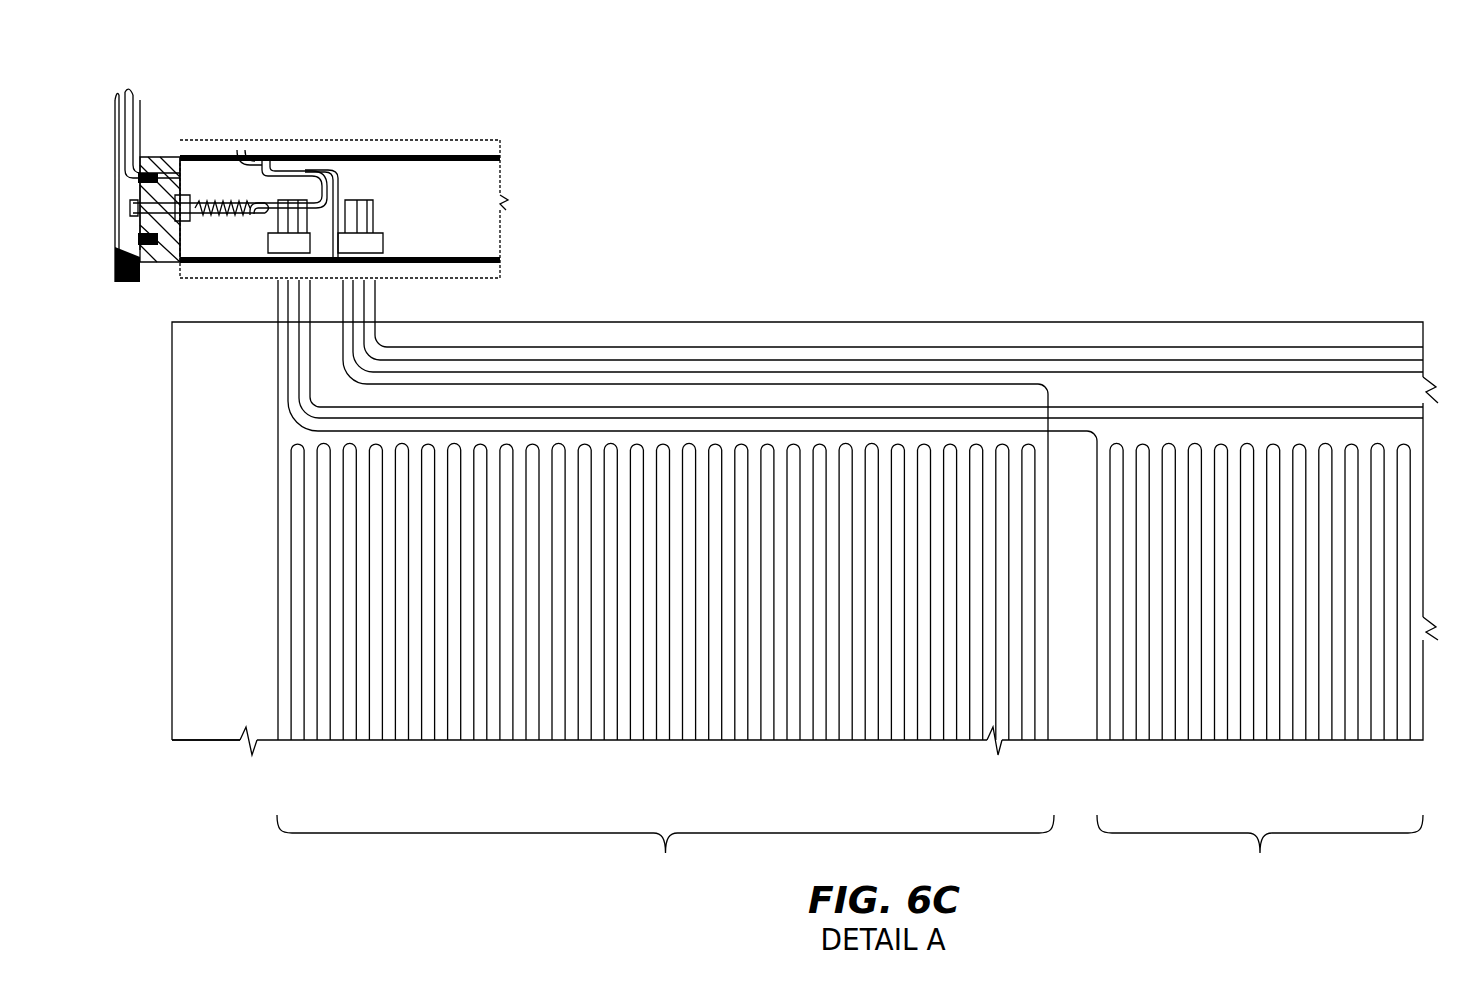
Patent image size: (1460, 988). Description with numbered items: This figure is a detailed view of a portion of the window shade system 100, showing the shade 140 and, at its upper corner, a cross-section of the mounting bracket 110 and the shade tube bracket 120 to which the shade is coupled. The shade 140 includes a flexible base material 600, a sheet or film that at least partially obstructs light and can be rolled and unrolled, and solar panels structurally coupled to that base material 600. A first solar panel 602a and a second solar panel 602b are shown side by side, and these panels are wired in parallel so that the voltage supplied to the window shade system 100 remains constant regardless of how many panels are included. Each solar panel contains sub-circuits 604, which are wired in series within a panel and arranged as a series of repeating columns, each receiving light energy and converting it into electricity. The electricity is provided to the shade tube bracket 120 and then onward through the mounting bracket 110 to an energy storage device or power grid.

The window shade system 100 is at (979, 274).
The mounting bracket 110 is at (142, 102).
The shade tube bracket 120 is at (167, 151).
The shade 140 is at (206, 755).
The base material 600 is at (172, 522).
The first solar panel 602a is at (850, 582).
The second solar panel 602b is at (855, 582).
The sub-circuits 604 is at (277, 748).